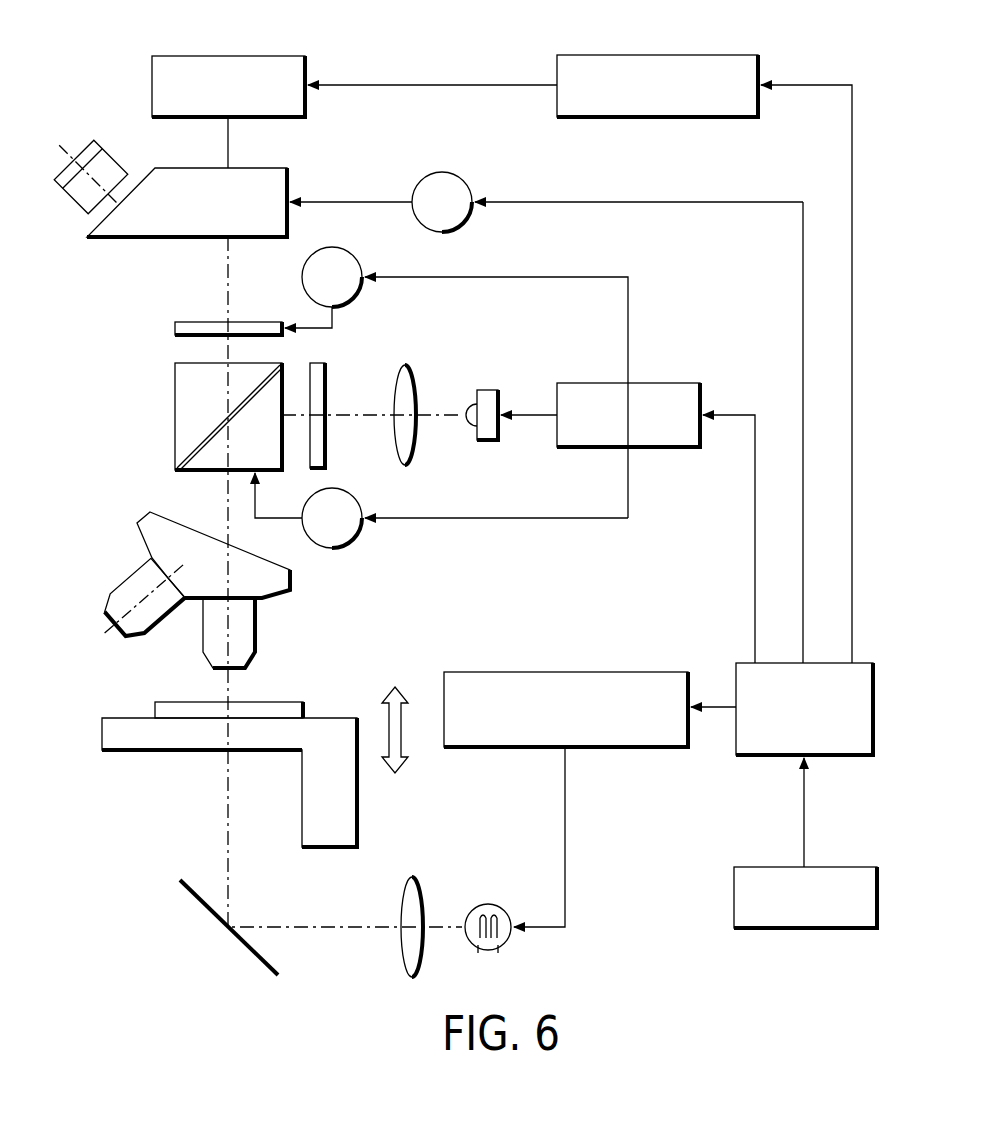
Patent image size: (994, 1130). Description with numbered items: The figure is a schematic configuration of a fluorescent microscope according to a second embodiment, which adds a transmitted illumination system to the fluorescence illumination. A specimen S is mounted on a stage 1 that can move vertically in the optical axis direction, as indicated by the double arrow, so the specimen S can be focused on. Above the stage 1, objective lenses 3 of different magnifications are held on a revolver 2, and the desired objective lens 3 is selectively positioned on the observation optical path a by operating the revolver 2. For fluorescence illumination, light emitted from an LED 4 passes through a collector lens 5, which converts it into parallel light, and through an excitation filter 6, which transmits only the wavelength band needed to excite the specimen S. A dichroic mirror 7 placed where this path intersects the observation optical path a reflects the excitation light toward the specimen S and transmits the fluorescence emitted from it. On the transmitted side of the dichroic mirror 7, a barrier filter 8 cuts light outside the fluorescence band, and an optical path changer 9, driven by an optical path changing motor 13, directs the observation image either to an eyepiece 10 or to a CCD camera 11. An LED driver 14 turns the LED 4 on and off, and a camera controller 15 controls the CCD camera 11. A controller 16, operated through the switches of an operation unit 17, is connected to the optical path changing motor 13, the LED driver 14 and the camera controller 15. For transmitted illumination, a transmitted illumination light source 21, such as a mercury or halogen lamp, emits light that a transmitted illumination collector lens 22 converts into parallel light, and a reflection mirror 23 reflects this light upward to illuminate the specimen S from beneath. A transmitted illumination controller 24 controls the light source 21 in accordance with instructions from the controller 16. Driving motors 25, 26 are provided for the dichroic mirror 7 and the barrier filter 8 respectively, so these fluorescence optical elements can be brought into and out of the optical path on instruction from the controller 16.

The stage 1 is at (302, 796).
The revolver 2 is at (150, 512).
The objective lens 3 is at (122, 578).
The LED 4 is at (490, 390).
The collector lens 5 is at (410, 368).
The excitation filter 6 is at (326, 376).
The dichroic mirror 7 is at (175, 390).
The barrier filter 8 is at (194, 320).
The optical path changer 9 is at (290, 180).
The eyepiece 10 is at (85, 200).
The CCD camera 11 is at (270, 55).
The optical path changing motor 13 is at (443, 172).
The LED driver 14 is at (673, 383).
The camera controller 15 is at (666, 55).
The controller 16 is at (873, 662).
The operation unit 17 is at (851, 867).
The transmitted illumination light source 21 is at (490, 904).
The transmitted illumination collector lens 22 is at (413, 877).
The reflection mirror 23 is at (258, 960).
The transmitted illumination controller 24 is at (606, 672).
The driving motor 25 is at (348, 546).
The driving motor 26 is at (356, 256).
The observation optical path a is at (228, 683).
The specimen S is at (300, 702).